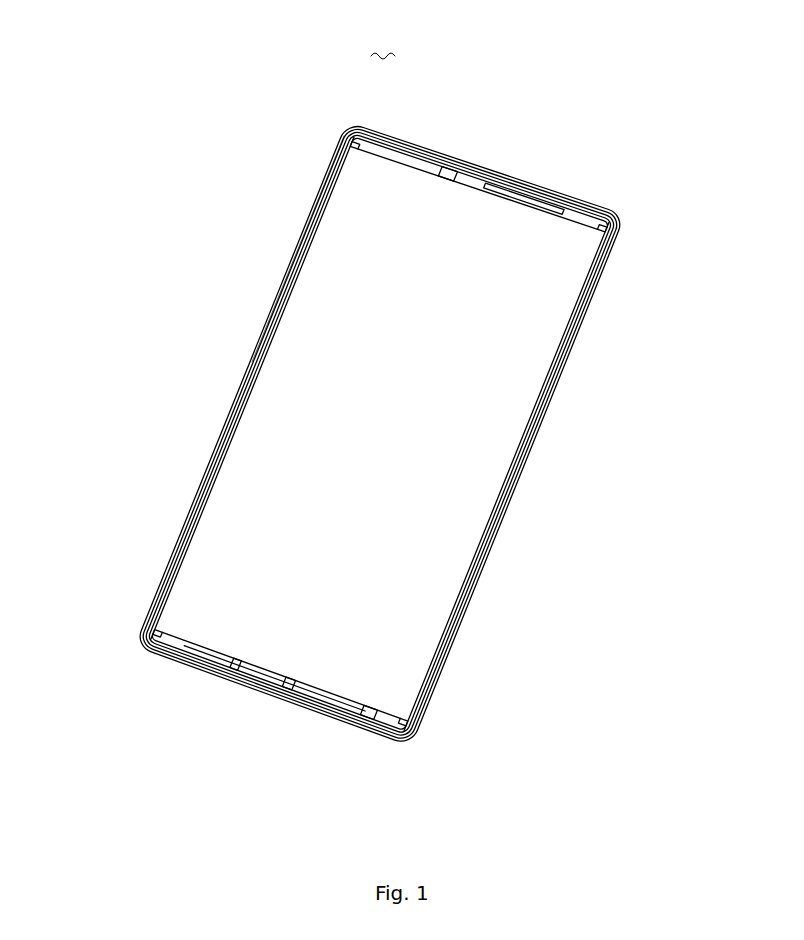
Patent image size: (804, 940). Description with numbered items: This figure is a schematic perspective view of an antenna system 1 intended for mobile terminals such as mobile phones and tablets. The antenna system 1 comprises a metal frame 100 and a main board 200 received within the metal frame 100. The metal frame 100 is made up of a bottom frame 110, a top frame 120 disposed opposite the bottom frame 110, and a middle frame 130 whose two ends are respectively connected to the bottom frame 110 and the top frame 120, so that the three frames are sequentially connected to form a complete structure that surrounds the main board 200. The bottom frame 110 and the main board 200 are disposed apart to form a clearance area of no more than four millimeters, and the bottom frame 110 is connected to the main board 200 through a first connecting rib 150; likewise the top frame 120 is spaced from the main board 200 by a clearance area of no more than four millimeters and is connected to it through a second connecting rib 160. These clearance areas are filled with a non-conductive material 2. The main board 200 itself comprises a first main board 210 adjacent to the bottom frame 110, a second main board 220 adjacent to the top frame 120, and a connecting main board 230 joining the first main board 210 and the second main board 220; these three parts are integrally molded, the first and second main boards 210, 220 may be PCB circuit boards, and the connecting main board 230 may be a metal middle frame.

The antenna system 1 is at (383, 43).
The metal frame 100 is at (187, 509).
The bottom frame 110 is at (248, 688).
The top frame 120 is at (383, 132).
The middle frame 130 is at (257, 365).
The first connecting rib 150 is at (365, 722).
The second connecting rib 160 is at (455, 172).
The non-conductive material 2 is at (537, 190).
The main board 200 is at (670, 318).
The first main board 210 is at (415, 648).
The second main board 220 is at (553, 317).
The connecting main board 230 is at (492, 432).